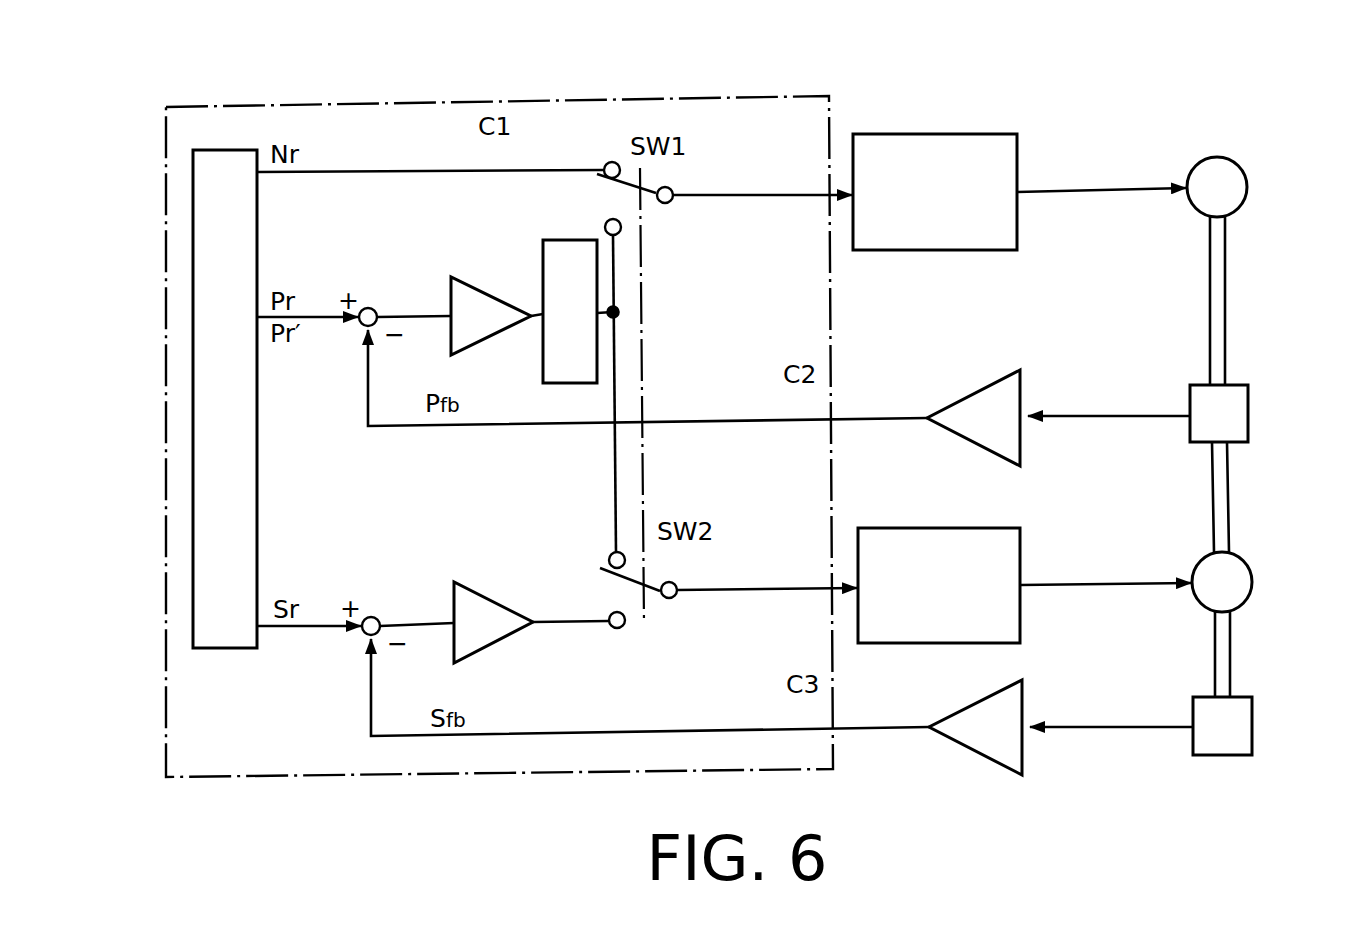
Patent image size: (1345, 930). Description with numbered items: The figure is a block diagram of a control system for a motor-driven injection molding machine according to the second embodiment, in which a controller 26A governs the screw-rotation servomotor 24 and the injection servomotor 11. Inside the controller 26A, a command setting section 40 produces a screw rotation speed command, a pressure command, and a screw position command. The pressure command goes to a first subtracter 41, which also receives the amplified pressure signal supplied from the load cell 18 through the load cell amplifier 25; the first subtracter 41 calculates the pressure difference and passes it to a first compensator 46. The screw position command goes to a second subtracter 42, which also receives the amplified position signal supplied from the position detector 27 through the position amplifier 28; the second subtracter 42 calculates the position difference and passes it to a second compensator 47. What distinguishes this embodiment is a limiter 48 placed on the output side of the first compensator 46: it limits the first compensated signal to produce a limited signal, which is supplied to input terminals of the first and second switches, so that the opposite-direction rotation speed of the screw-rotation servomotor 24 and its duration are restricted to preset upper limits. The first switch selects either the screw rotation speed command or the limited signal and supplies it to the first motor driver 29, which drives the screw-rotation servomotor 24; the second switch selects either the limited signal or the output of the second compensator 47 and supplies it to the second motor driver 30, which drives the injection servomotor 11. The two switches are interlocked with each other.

The controller 26A is at (490, 100).
The command setting section 40 is at (225, 434).
The first subtracter 41 is at (368, 308).
The second subtracter 42 is at (372, 616).
The first compensator 46 is at (474, 288).
The second compensator 47 is at (480, 590).
The limiter 48 is at (564, 242).
The first motor driver 29 is at (888, 134).
The second motor driver 30 is at (892, 528).
The screw-rotation servomotor 24 is at (1248, 186).
The injection servomotor 11 is at (1253, 581).
The load cell 18 is at (1250, 400).
The position detector 27 is at (1254, 712).
The load cell amplifier 25 is at (1013, 413).
The position amplifier 28 is at (1015, 722).